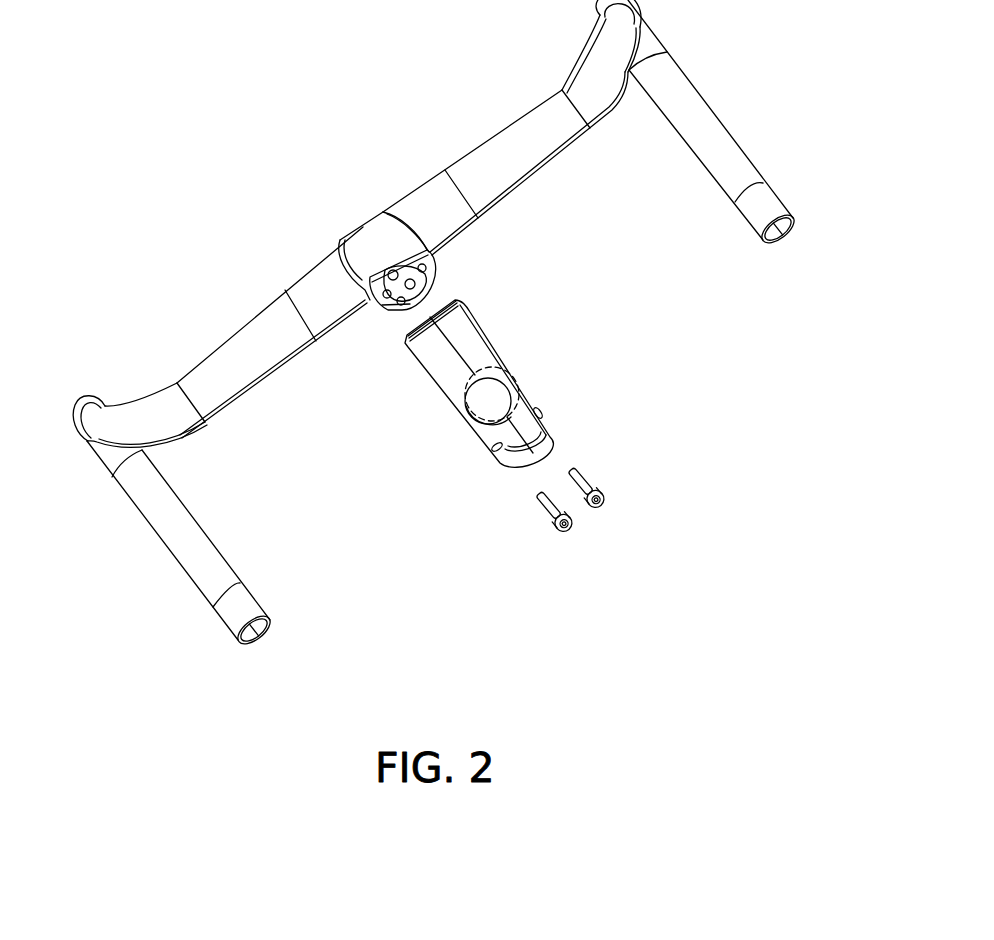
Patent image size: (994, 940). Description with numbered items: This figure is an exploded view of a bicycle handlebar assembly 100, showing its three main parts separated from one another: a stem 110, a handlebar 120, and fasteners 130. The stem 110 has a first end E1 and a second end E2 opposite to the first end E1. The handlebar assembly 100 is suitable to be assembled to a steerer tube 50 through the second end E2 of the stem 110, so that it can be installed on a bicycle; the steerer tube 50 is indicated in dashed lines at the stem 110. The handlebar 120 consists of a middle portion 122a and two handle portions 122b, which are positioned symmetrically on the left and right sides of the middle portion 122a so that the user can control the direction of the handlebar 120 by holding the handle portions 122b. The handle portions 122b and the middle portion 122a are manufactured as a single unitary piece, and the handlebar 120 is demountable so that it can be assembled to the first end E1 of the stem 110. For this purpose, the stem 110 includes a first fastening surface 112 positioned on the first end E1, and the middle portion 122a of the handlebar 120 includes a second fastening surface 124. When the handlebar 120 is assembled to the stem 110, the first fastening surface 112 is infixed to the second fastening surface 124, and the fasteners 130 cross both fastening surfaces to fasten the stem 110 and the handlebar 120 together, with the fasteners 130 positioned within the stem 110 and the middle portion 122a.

The handlebar assembly 100 is at (781, 624).
The handlebar 120 is at (334, 139).
The middle portion 122a is at (373, 224).
The handle portions 122b is at (433, 192).
The second fastening surface 124 is at (452, 262).
The stem 110 is at (475, 345).
The first fastening surface 112 is at (435, 307).
The steerer tube 50 is at (493, 390).
The first end E1 is at (405, 345).
The second end E2 is at (562, 448).
The fasteners 130 is at (550, 508).